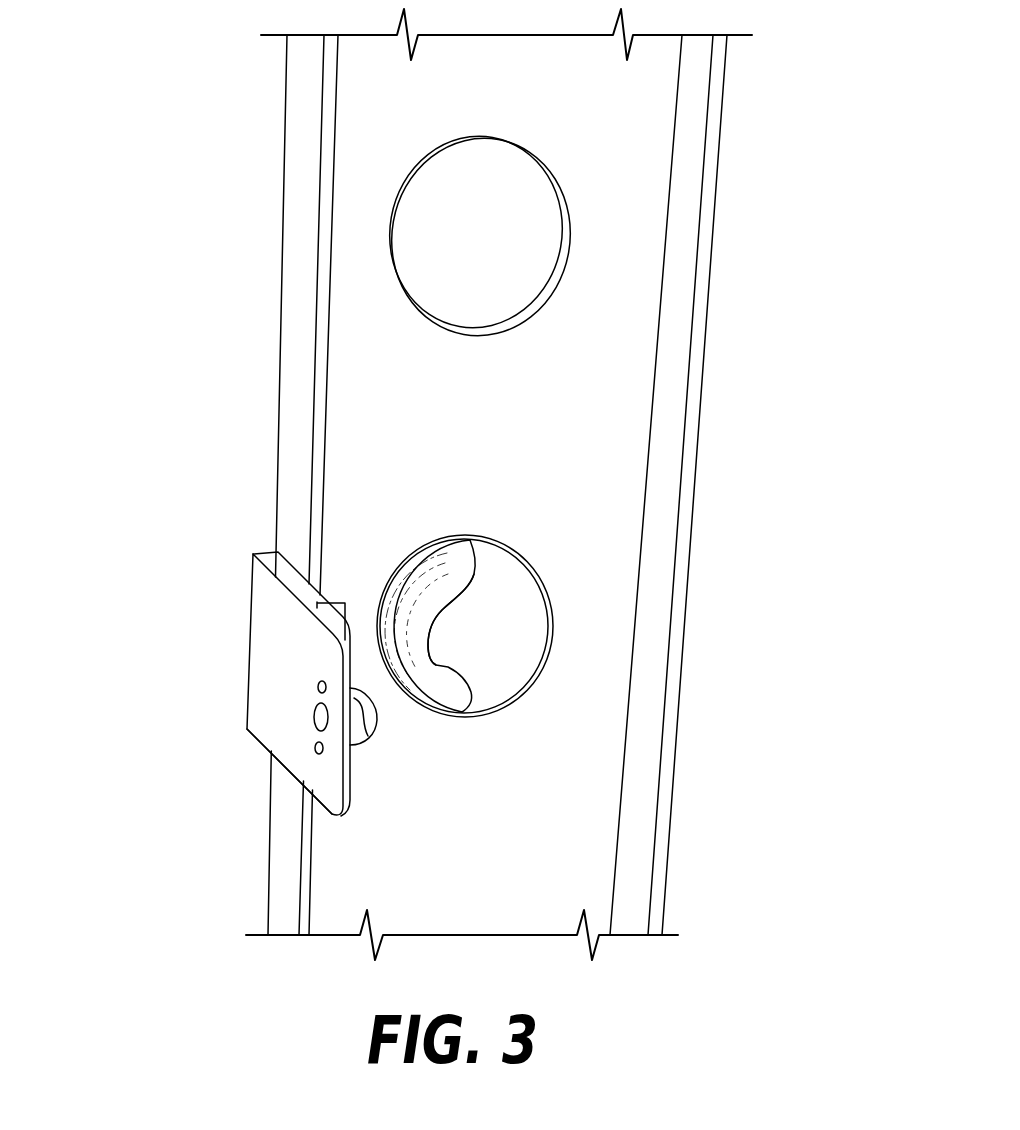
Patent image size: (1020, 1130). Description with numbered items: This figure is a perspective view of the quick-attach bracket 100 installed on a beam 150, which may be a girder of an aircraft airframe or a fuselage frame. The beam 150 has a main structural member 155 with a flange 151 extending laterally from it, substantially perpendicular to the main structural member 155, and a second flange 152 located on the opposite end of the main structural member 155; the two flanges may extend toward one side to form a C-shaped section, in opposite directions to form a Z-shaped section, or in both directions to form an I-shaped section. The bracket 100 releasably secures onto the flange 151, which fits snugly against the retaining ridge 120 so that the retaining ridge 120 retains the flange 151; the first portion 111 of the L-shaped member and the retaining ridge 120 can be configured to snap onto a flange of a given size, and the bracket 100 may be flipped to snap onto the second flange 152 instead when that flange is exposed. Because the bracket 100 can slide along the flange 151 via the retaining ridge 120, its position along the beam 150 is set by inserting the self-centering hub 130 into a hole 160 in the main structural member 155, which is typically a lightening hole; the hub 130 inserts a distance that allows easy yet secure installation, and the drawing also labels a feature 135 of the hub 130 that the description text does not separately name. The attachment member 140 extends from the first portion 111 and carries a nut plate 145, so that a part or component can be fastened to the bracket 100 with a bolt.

The quick-attach bracket 100 is at (272, 671).
The first portion 111 is at (258, 675).
The retaining ridge 120 is at (332, 601).
The self-centering hub 130 is at (468, 607).
The insert inner edge 135 is at (452, 637).
The attachment member 140 is at (313, 793).
The nut plate 145 is at (377, 747).
The beam 150 is at (237, 145).
The flange 151 is at (293, 317).
The second flange 152 is at (707, 287).
The main structural member 155 is at (525, 425).
The hole 160 is at (530, 585).